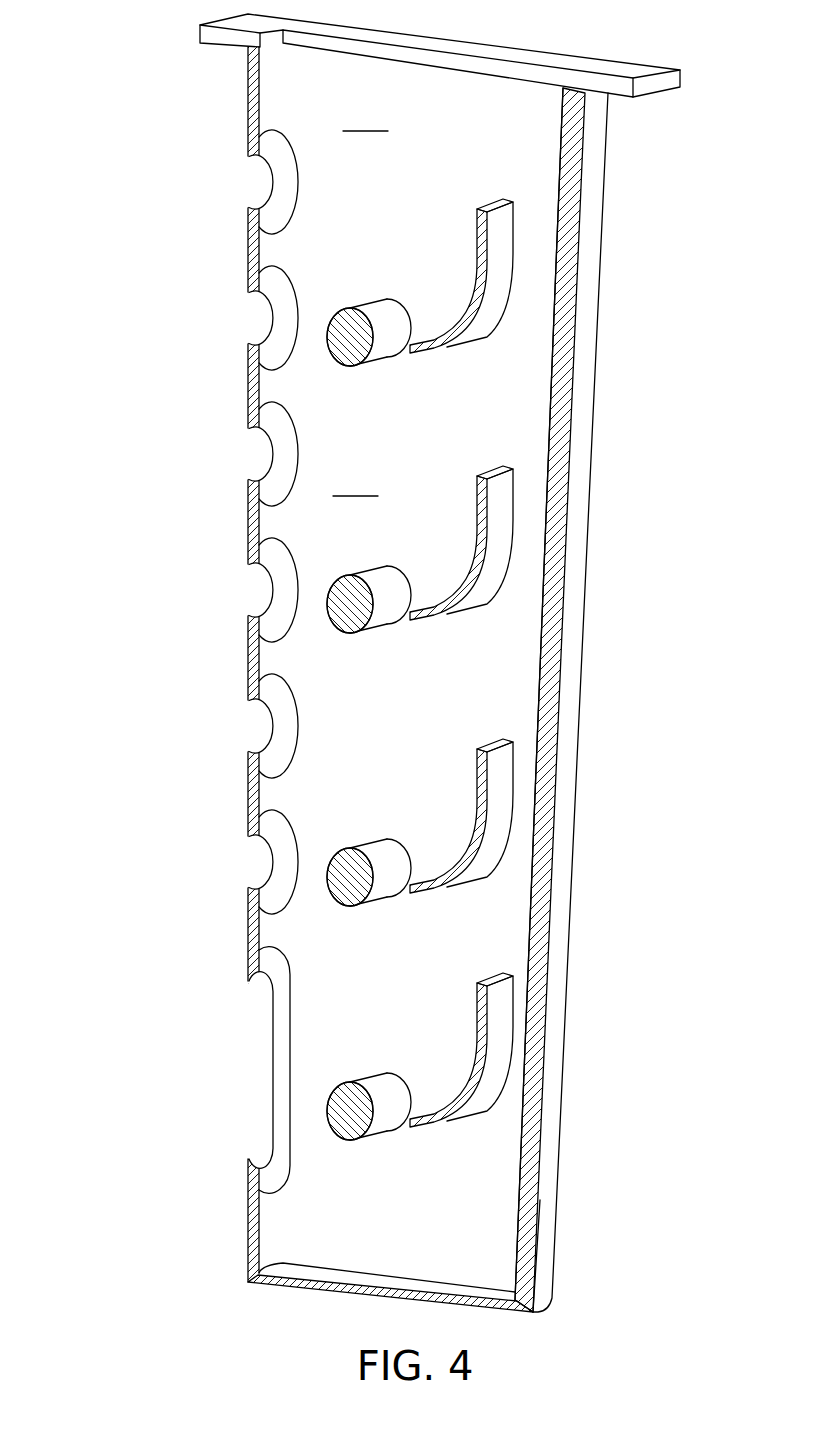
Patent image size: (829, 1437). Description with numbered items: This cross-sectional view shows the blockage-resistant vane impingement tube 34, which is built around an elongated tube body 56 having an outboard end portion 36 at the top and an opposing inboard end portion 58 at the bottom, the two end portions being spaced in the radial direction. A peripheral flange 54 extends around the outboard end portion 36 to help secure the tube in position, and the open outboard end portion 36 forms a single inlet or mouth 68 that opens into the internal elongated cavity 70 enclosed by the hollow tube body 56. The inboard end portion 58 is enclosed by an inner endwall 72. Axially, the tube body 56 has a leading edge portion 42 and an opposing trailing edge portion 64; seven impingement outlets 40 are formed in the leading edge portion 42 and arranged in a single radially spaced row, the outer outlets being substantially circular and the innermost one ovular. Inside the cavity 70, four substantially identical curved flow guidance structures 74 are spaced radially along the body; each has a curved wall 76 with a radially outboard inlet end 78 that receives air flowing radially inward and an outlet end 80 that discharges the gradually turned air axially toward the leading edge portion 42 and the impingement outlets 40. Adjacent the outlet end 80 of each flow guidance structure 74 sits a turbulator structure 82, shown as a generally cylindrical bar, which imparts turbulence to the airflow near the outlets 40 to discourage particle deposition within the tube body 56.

The vane impingement tube 34 is at (385, 672).
The outboard end portion 36 is at (480, 98).
The impingement outlets 40 is at (245, 182).
The leading edge portion 42 is at (250, 95).
The peripheral flange 54 is at (628, 62).
The elongated tube body 56 is at (576, 427).
The inboard end portion 58 is at (525, 1279).
The trailing edge portion 64 is at (540, 690).
The inlet 68 is at (365, 117).
The elongated cavity 70 is at (355, 482).
The inner endwall 72 is at (307, 1283).
The curved flow guidance structures 74 is at (489, 303).
The curved wall 76 is at (479, 272).
The inlet end 78 is at (477, 207).
The outlet end 80 is at (408, 356).
The turbulator structures 82 is at (350, 364).